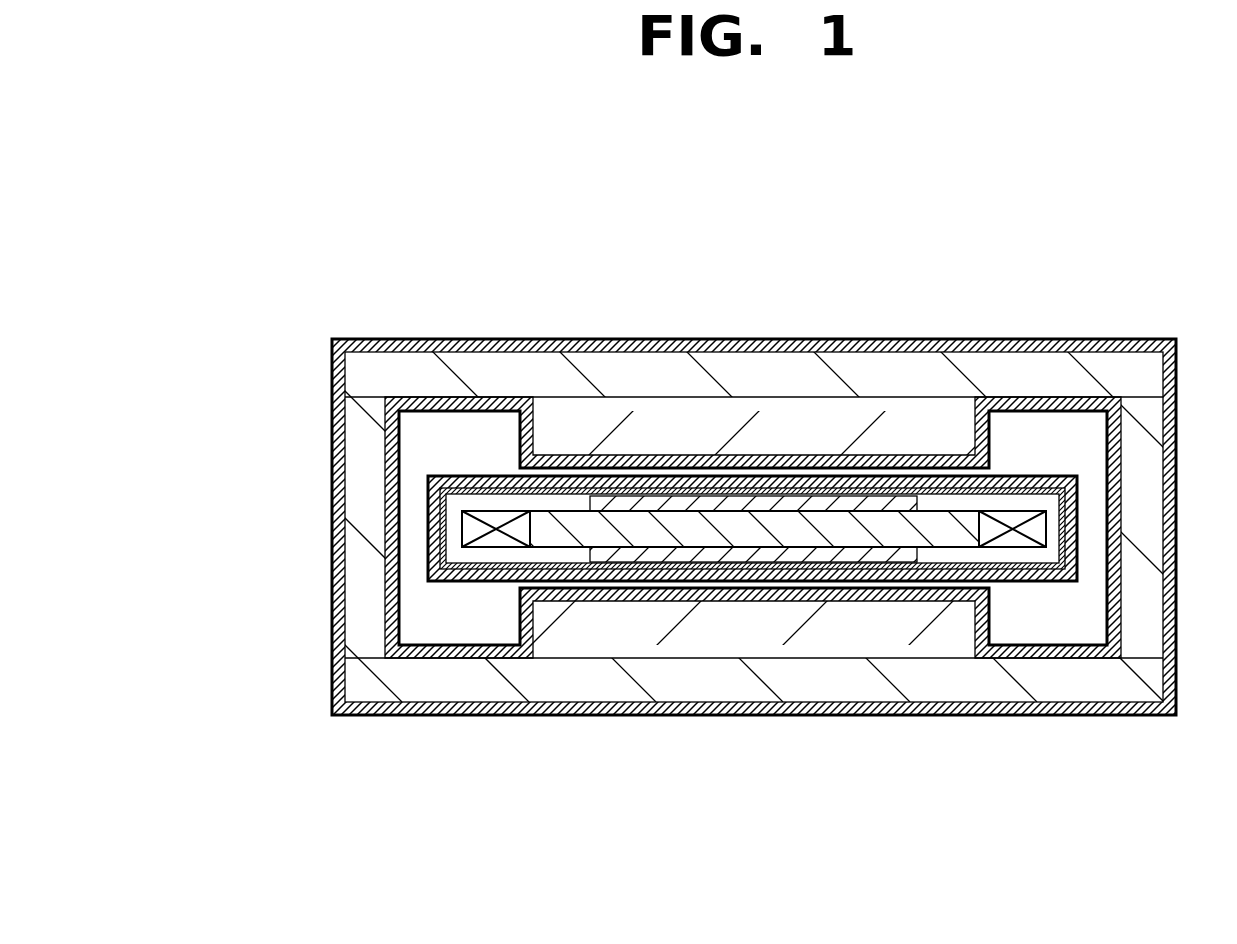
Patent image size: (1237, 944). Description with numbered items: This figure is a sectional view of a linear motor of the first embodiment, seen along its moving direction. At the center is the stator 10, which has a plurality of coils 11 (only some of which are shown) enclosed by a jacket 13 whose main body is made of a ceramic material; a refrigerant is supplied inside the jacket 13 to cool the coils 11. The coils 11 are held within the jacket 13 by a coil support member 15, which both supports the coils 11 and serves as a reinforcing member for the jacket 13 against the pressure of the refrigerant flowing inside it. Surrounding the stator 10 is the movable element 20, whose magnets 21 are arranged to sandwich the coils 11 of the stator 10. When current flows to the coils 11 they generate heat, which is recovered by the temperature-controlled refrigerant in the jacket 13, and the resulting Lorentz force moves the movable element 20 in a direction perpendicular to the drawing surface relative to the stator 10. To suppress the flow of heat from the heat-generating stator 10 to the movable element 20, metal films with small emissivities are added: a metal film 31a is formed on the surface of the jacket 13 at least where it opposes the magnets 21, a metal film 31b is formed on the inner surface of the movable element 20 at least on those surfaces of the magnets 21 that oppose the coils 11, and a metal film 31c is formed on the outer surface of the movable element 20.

The stator 10 is at (1150, 178).
The coils 11 is at (494, 511).
The jacket 13 is at (1053, 476).
The coil support member 15 is at (682, 500).
The movable element 20 is at (1150, 813).
The magnets 21 is at (682, 638).
The metal film 31a is at (858, 476).
The metal film 31b is at (1000, 662).
The metal film 31c is at (334, 586).